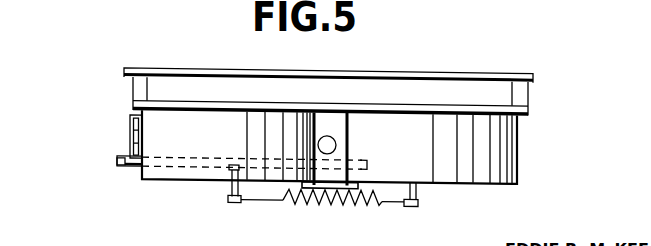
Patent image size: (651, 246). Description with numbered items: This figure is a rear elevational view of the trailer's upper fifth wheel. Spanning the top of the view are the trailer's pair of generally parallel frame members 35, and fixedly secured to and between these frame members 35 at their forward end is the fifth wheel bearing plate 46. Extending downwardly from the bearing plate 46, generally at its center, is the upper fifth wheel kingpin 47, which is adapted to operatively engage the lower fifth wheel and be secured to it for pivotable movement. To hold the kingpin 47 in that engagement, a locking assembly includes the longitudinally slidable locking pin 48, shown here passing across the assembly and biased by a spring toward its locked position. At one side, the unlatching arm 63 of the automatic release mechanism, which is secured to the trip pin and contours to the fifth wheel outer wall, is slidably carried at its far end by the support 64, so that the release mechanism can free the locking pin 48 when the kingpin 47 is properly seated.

The frame members 35 is at (137, 88).
The fifth wheel bearing plate 46 is at (431, 108).
The upper fifth wheel kingpin 47 is at (332, 178).
The locking pin 48 is at (202, 164).
The unlatching arm 63 is at (132, 147).
The support 64 is at (131, 120).